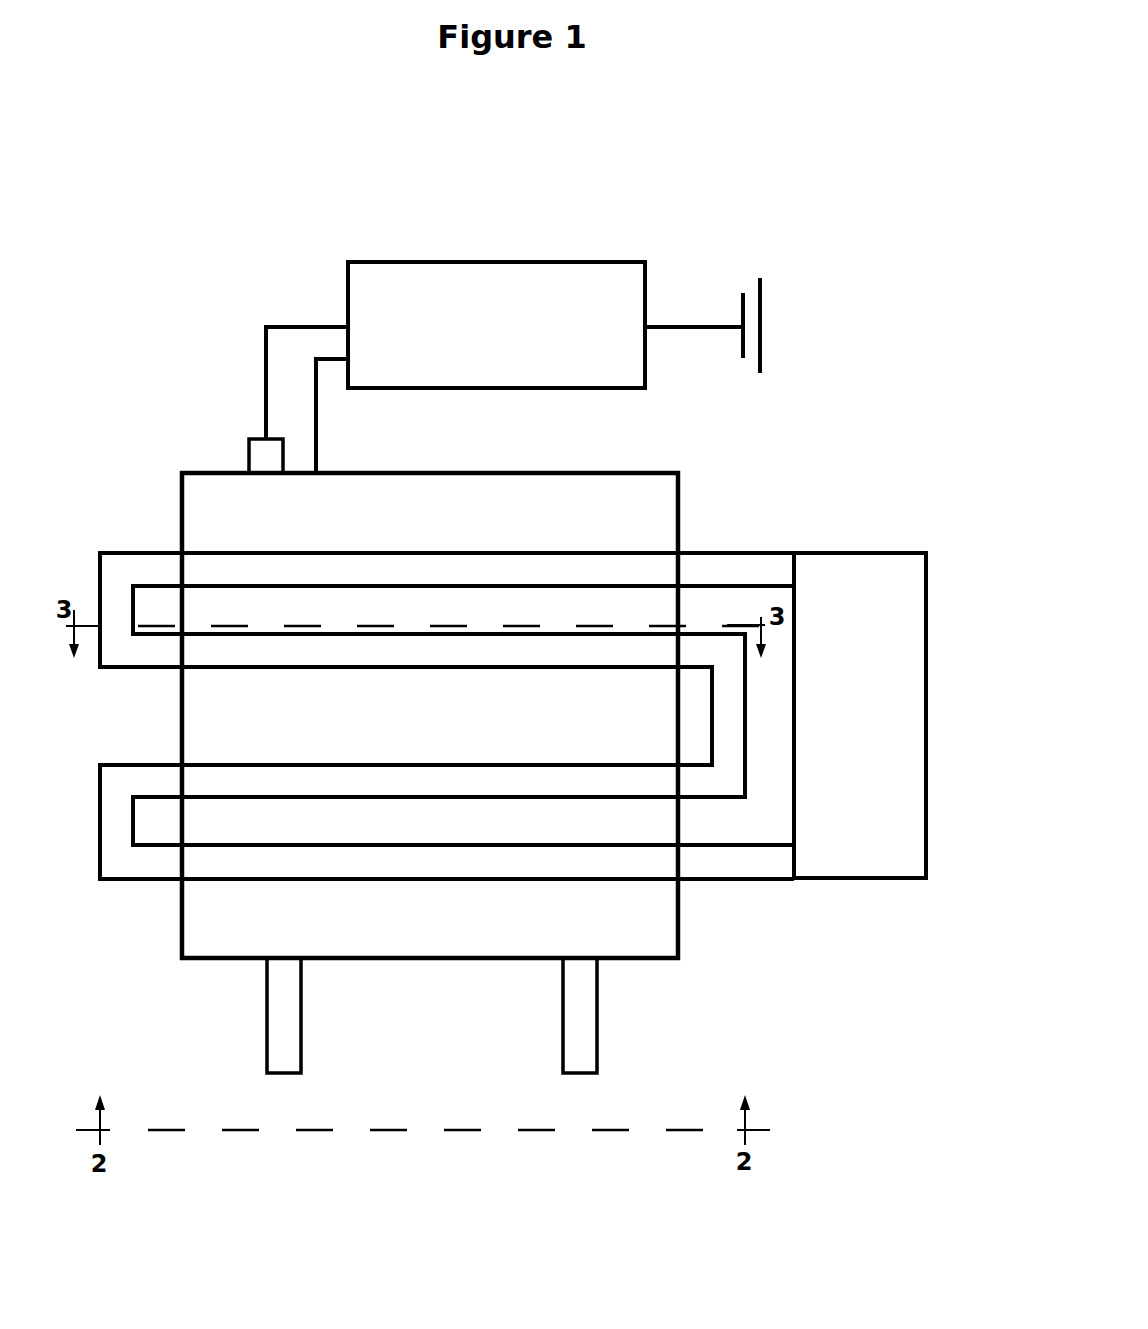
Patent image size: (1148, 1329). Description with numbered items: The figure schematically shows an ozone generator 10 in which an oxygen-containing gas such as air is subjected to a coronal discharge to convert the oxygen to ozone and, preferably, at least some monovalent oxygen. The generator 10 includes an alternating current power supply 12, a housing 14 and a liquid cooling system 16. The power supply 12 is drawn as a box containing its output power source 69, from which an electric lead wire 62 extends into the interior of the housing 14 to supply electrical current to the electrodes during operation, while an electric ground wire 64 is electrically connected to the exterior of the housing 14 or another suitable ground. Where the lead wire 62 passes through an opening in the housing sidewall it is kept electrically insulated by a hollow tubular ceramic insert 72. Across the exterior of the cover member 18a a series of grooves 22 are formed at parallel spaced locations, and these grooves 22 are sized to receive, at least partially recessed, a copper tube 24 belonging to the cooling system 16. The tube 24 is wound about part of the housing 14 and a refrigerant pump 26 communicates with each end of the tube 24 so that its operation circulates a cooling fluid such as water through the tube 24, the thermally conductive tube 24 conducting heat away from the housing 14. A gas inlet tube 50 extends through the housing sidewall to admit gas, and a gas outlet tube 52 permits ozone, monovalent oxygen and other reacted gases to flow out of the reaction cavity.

The ozone generator 10 is at (840, 221).
The alternating current power supply 12 is at (532, 306).
The housing 14 is at (164, 476).
The liquid cooling system 16 is at (790, 523).
The cover member 18a is at (398, 720).
The grooves 22 is at (343, 598).
The copper tube 24 is at (542, 663).
The refrigerant pump 26 is at (860, 715).
The gas inlet tube 50 is at (612, 1012).
The gas outlet tube 52 is at (316, 1012).
The electric lead wire 62 is at (266, 314).
The electric ground wire 64 is at (332, 395).
The output power source 69 is at (485, 329).
The hollow tubular ceramic insert 72 is at (249, 426).